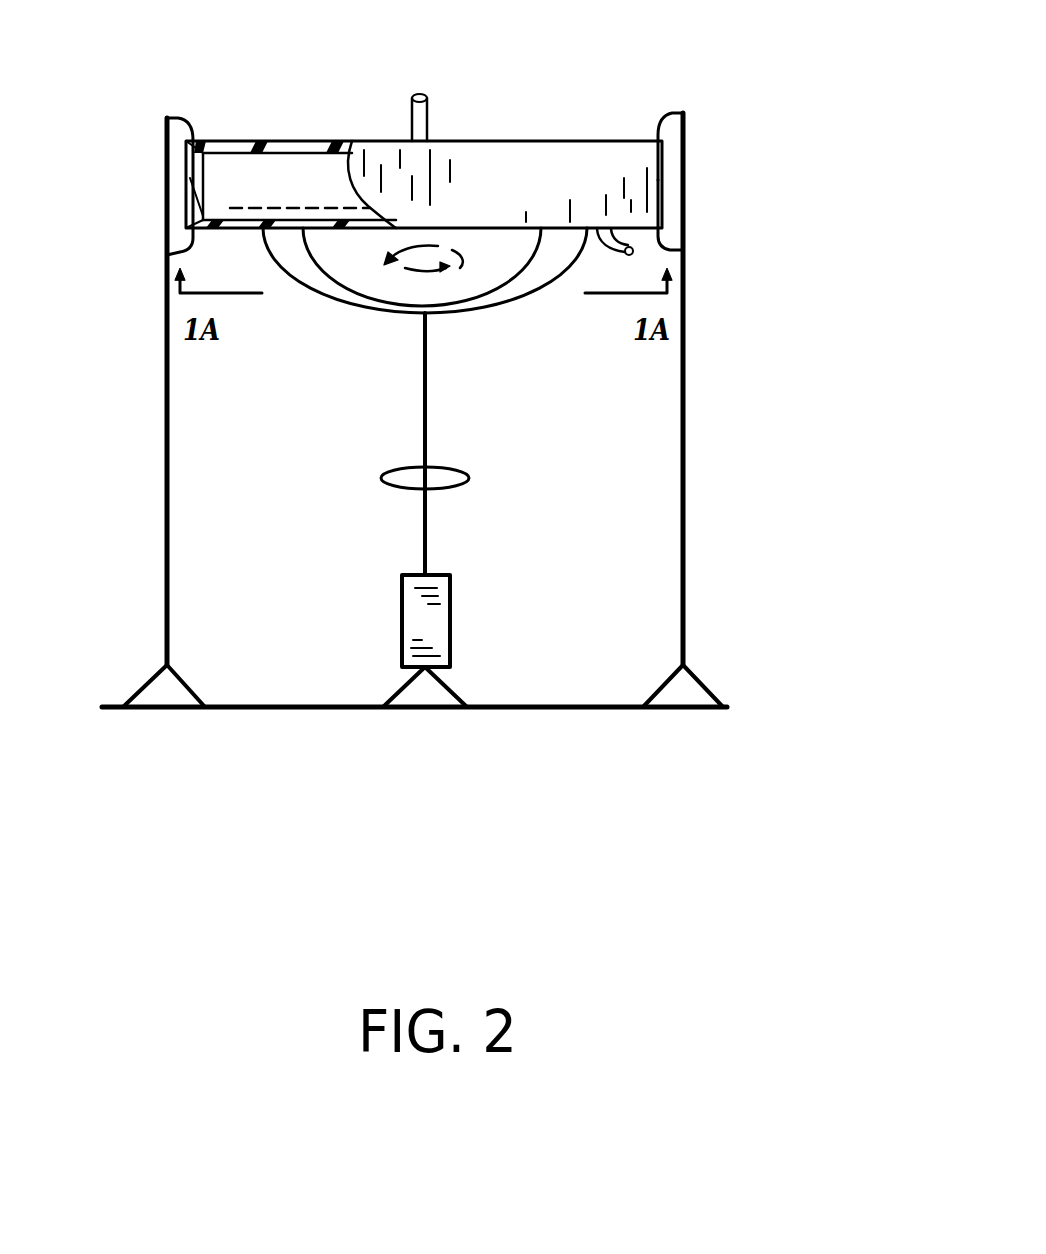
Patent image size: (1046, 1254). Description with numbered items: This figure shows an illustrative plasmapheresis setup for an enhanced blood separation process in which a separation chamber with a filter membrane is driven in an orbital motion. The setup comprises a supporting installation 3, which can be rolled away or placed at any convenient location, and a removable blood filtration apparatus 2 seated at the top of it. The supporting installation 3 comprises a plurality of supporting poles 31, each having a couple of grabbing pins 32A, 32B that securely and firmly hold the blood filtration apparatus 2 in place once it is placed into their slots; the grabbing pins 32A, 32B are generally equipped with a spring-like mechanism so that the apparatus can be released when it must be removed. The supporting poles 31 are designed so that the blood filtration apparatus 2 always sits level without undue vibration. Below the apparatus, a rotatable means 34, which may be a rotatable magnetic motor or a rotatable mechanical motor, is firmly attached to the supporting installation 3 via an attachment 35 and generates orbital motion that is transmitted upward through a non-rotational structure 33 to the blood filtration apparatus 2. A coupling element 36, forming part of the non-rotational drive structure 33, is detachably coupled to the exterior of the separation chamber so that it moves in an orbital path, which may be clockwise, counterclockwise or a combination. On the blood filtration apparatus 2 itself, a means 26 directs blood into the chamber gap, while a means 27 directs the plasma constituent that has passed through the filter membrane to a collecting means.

The blood filtration apparatus 2 is at (550, 122).
The supporting installation 3 is at (770, 383).
The means for directing a blood into the chamber gap 26 is at (433, 113).
The means for directing the plasma constituent 27 is at (623, 233).
The supporting poles 31 is at (152, 533).
The grabbing pin 32A is at (675, 103).
The grabbing pin 32B is at (677, 237).
The non-rotational structure 33 is at (460, 453).
The rotatable means 34 is at (458, 593).
The attachment 35 is at (462, 688).
The coupling element 36 is at (300, 298).